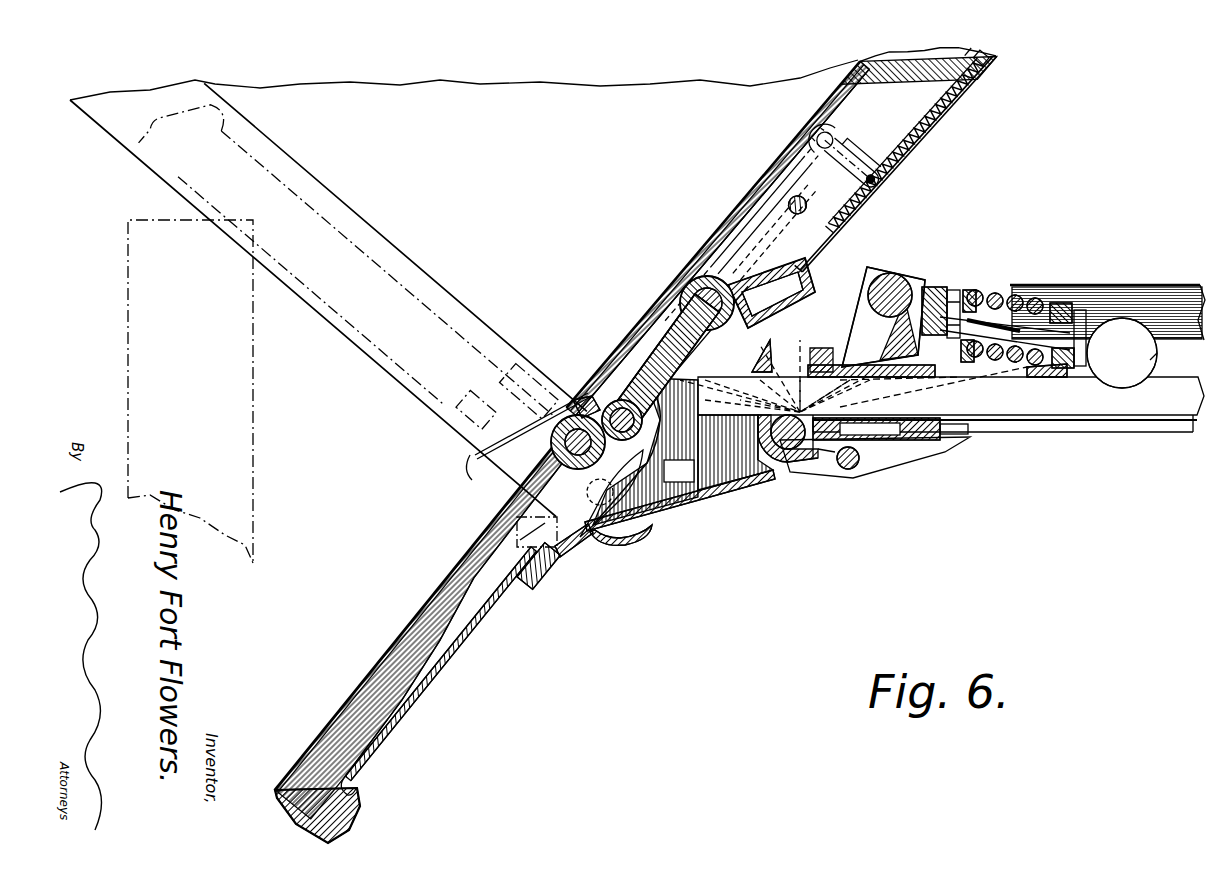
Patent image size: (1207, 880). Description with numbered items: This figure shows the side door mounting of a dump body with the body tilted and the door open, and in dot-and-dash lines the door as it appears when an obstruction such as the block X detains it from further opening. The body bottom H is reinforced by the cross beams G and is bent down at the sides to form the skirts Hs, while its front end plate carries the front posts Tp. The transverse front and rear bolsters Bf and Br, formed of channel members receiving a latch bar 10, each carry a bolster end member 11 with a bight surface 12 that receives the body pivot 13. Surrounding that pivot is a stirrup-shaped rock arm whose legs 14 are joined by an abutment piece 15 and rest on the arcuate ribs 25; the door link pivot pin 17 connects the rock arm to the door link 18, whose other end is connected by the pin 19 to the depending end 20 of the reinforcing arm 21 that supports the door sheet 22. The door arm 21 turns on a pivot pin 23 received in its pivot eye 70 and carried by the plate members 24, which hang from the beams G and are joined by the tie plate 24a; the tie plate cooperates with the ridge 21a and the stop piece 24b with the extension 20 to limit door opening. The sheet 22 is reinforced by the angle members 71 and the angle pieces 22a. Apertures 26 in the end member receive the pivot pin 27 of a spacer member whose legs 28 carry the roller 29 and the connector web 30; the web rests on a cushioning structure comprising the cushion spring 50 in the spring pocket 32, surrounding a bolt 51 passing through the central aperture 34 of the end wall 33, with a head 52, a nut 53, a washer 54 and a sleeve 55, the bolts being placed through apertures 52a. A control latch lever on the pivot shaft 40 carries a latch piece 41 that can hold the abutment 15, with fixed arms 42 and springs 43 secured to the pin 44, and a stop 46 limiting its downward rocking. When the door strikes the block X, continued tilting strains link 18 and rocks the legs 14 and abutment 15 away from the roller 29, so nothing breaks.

The latch bar 10 is at (1170, 405).
The bolster end member 11 is at (868, 367).
The bight surface 12 is at (745, 440).
The body pivot 13 is at (800, 470).
The rock arm legs 14 is at (800, 360).
The abutment piece 15 is at (760, 275).
The door link pivot pin 17 is at (703, 283).
The door link 18 is at (640, 318).
The pin 19 is at (615, 405).
The depending end 20 is at (645, 451).
The reinforcing arm 21 is at (440, 652).
The ridge 21a is at (600, 552).
The door sheet 22 is at (398, 642).
The angle pieces 22a is at (527, 545).
The pivot pin 23 is at (550, 443).
The plate members 24 is at (728, 478).
The tie plate 24a is at (712, 498).
The stop piece 24b is at (575, 400).
The arcuate ribs 25 is at (785, 462).
The apertures 26 is at (862, 465).
The pivot pin 27 is at (850, 470).
The spacer member legs 28 is at (860, 322).
The roller 29 is at (893, 278).
The connector web 30 is at (936, 288).
The spring pocket 32 is at (983, 370).
The end wall 33 is at (1050, 375).
The central aperture 34 is at (1086, 340).
The pivot shaft 40 is at (815, 138).
The latch piece 41 is at (760, 215).
The fixed arms 42 is at (855, 165).
The springs 43 is at (940, 112).
The pin 44 is at (975, 70).
The stop 46 is at (798, 210).
The cushion spring 50 is at (1000, 295).
The bolt 51 is at (1060, 330).
The bolt head 52 is at (1082, 355).
The apertures 52a is at (1178, 351).
The nut 53 is at (955, 290).
The washer 54 is at (975, 300).
The sleeve 55 is at (1025, 312).
The pivot eye 70 is at (520, 470).
The angle members 71 is at (540, 588).
The cross beams G is at (789, 228).
The body bottom H is at (826, 97).
The front posts Tp is at (338, 312).
The block X is at (248, 435).
The downturned skirts Hs is at (590, 493).
The front bolster Bf is at (1140, 312).
The rear bolster Br is at (1107, 373).